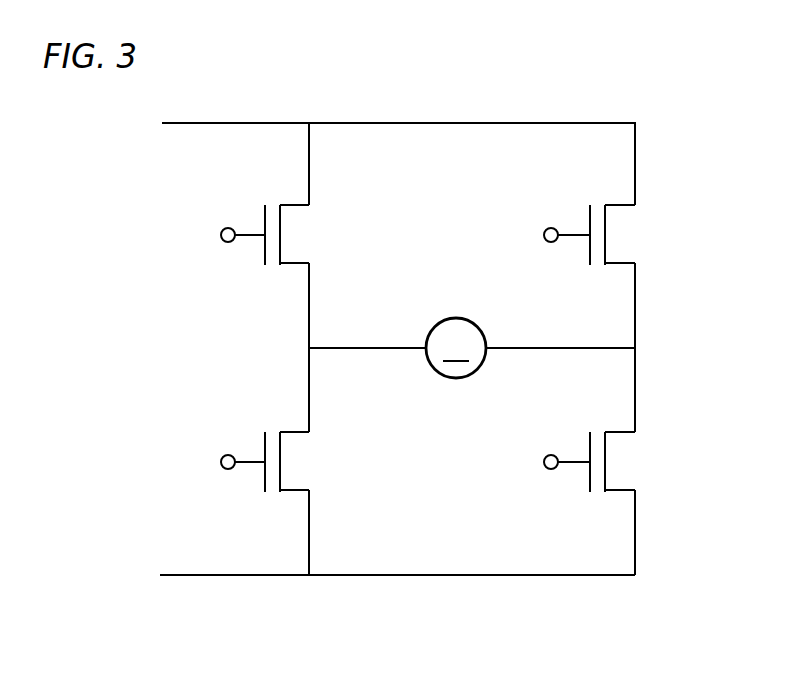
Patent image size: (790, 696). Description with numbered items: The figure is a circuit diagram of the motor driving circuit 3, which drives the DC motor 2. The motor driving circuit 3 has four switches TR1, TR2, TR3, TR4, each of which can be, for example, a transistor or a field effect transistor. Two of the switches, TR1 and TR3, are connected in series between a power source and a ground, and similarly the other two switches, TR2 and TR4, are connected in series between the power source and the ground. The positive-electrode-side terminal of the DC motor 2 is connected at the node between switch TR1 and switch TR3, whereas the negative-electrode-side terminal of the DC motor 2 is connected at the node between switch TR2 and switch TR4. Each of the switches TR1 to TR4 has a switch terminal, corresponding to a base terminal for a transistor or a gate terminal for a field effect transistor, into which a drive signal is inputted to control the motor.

The DC motor 2 is at (452, 378).
The motor driving circuit 3 is at (362, 397).
The switch TR1 is at (235, 234).
The switch TR2 is at (561, 234).
The switch TR3 is at (235, 460).
The switch TR4 is at (558, 460).